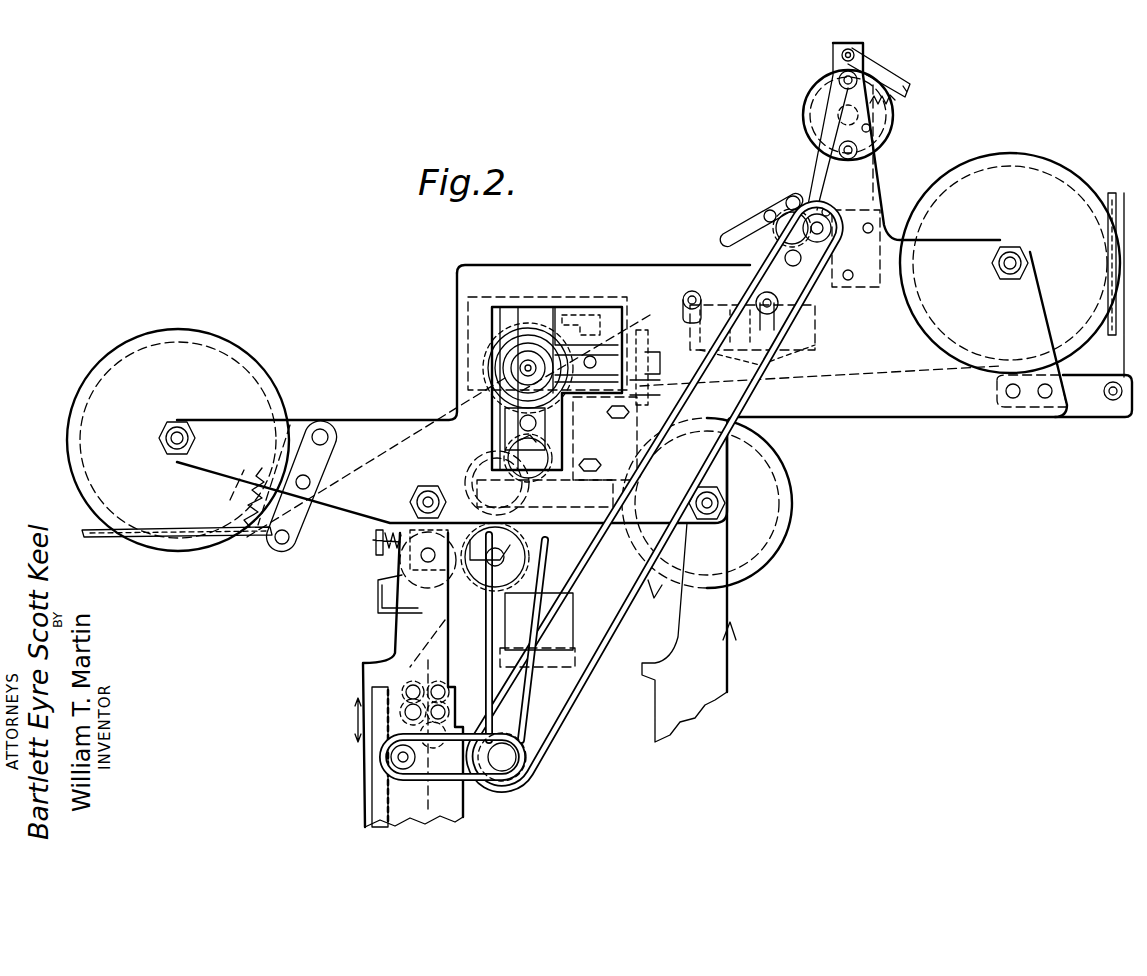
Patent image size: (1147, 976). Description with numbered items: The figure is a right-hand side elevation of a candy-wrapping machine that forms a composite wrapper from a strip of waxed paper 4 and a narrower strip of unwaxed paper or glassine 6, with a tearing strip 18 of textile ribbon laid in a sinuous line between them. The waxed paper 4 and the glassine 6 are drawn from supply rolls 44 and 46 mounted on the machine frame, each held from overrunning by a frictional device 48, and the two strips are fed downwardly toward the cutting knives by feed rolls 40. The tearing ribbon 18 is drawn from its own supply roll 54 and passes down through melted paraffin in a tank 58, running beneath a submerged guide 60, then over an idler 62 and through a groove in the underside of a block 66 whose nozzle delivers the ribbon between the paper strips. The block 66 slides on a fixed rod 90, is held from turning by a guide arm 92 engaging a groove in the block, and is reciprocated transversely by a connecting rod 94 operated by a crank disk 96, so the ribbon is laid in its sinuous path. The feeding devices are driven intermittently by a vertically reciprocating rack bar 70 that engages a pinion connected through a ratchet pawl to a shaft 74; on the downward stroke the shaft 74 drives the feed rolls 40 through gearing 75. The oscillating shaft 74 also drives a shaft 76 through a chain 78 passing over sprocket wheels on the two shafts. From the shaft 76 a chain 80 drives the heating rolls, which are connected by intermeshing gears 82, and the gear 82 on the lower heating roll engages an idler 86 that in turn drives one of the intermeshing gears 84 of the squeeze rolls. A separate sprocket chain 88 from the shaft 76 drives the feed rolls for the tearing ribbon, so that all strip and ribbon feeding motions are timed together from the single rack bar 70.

The strip of waxed paper 4 is at (890, 372).
The strip of unwaxed paper or glassine 6 is at (406, 412).
The tearing strip 18 is at (810, 163).
The feed rolls 40 is at (428, 672).
The supply roll 44 is at (1075, 185).
The supply roll 46 is at (246, 364).
The frictional device 48 is at (82, 530).
The supply roll 54 is at (880, 120).
The tank 58 is at (812, 348).
The guide 60 is at (812, 322).
The idler 62 is at (691, 292).
The block 66 is at (594, 340).
The rack bar 70 is at (372, 788).
The shaft 74 is at (400, 757).
The gearing 75 is at (400, 710).
The shaft 76 is at (518, 762).
The chain 78 is at (455, 782).
The chain 80 is at (488, 632).
The intermeshing gears 82 is at (548, 465).
The intermeshing gears 84 is at (398, 562).
The idler 86 is at (474, 464).
The sprocket chain 88 is at (625, 608).
The fixed rod 90 is at (605, 438).
The guide arm 92 is at (583, 305).
The connecting rod 94 is at (660, 362).
The crank disk 96 is at (648, 392).